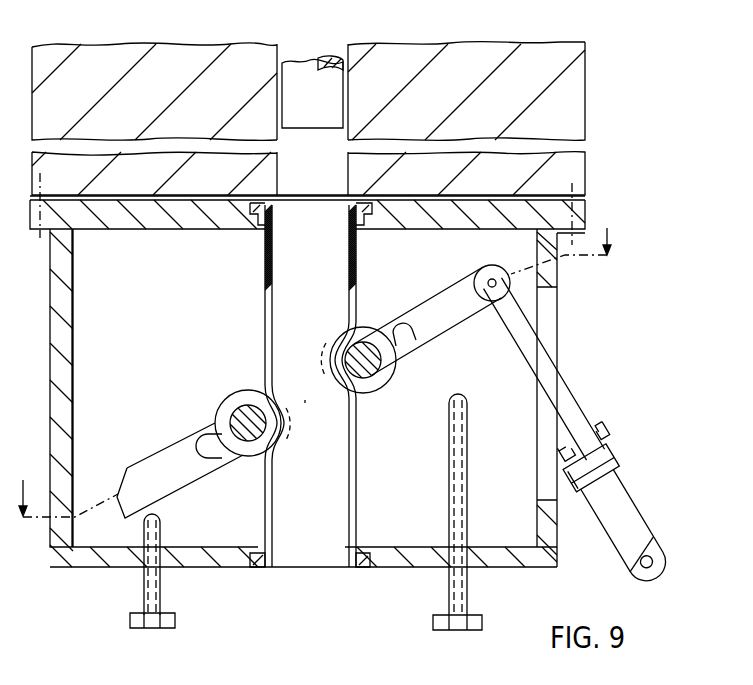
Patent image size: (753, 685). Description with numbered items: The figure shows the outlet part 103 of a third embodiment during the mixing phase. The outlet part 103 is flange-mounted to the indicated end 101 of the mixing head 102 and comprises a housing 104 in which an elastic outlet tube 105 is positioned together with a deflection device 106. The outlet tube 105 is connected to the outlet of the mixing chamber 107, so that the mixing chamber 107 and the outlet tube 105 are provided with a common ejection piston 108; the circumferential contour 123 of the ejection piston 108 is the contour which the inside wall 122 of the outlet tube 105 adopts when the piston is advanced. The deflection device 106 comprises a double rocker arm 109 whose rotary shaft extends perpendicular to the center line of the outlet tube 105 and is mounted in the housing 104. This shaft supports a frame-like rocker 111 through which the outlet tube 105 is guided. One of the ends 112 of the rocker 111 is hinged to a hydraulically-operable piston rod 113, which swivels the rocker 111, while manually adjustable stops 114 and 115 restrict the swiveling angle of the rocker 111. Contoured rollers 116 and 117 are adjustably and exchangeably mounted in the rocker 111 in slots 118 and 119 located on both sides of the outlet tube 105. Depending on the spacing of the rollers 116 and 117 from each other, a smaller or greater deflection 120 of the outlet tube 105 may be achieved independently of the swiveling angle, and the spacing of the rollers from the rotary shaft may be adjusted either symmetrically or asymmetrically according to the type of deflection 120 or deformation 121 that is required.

The end of the mixing head 101 is at (565, 116).
The mixing head 102 is at (124, 42).
The outlet part 103 is at (568, 296).
The housing 104 is at (80, 560).
The elastic outlet tube 105 is at (267, 258).
The deflection device 106 is at (201, 420).
The mixing chamber 107 is at (329, 187).
The ejection piston 108 is at (300, 82).
The double rocker arm 109 is at (172, 475).
The frame-like rocker 111 is at (143, 468).
The end of the rocker 112 is at (481, 272).
The hydraulically-operable piston rod 113 is at (557, 403).
The manually adjustable stop 114 is at (152, 593).
The manually adjustable stop 115 is at (453, 597).
The contoured roller 116 is at (247, 390).
The contoured roller 117 is at (371, 328).
The slot 118 is at (207, 440).
The slot 119 is at (403, 325).
The deflection 120 is at (257, 465).
The deformation 121 is at (308, 397).
The inside wall of the outlet tube 122 is at (277, 545).
The circumferential contour of the ejection piston 123 is at (356, 88).